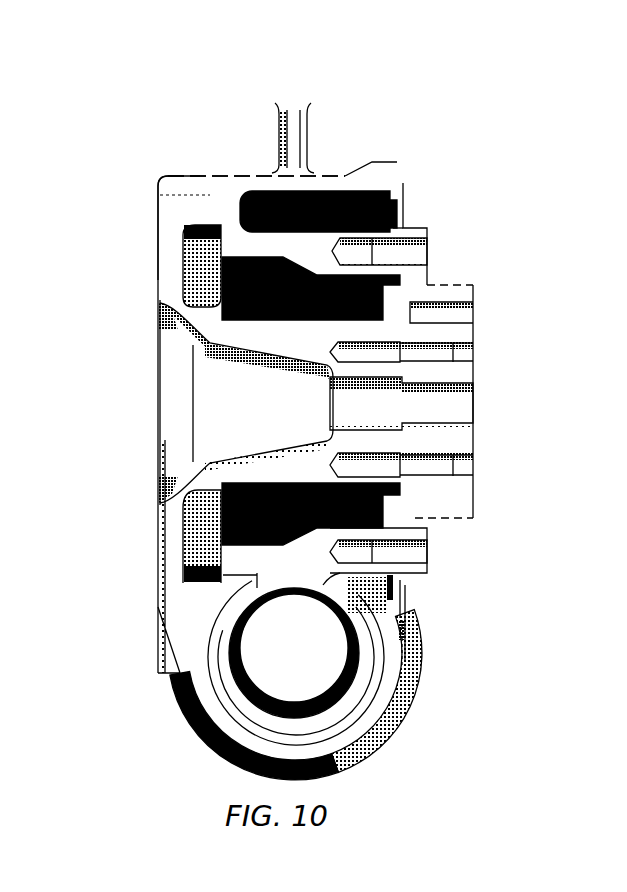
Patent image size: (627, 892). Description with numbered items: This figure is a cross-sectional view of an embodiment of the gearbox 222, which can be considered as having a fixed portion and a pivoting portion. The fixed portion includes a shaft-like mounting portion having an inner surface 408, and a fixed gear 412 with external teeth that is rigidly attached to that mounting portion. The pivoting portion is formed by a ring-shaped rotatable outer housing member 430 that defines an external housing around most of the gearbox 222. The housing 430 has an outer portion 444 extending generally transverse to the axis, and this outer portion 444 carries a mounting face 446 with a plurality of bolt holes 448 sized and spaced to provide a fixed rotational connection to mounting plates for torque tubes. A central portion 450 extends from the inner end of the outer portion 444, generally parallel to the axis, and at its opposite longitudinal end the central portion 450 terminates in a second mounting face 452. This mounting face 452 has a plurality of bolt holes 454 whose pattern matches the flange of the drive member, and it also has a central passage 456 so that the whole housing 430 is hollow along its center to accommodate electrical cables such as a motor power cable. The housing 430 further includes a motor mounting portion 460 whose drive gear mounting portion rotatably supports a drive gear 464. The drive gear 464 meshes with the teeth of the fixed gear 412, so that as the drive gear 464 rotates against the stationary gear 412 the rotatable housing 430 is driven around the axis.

The gearbox 222 is at (285, 43).
The outer housing member 430 is at (260, 173).
The bolt holes 448 is at (158, 205).
The mounting face 446 is at (158, 283).
The outer portion 444 is at (92, 321).
The central portion 450 is at (166, 484).
The inner surface 408 is at (413, 229).
The bolt holes 454 is at (473, 343).
The central passage 456 is at (473, 385).
The mounting face 452 is at (474, 492).
The gear 412 is at (337, 577).
The drive gear 464 is at (320, 663).
The motor mounting portion 460 is at (146, 722).